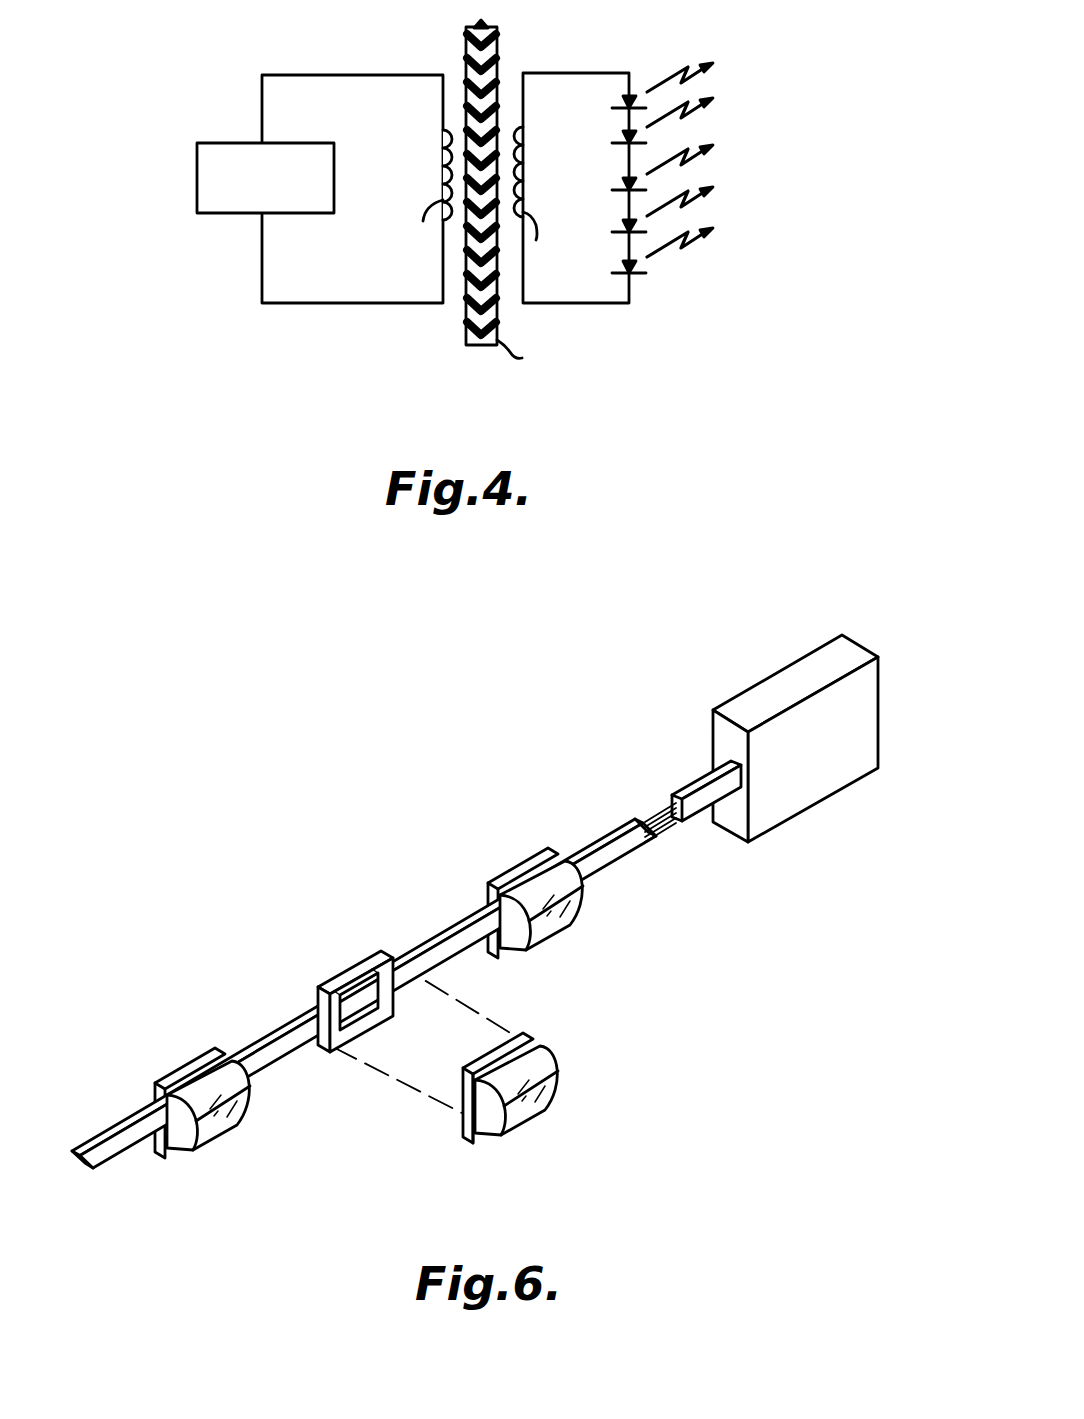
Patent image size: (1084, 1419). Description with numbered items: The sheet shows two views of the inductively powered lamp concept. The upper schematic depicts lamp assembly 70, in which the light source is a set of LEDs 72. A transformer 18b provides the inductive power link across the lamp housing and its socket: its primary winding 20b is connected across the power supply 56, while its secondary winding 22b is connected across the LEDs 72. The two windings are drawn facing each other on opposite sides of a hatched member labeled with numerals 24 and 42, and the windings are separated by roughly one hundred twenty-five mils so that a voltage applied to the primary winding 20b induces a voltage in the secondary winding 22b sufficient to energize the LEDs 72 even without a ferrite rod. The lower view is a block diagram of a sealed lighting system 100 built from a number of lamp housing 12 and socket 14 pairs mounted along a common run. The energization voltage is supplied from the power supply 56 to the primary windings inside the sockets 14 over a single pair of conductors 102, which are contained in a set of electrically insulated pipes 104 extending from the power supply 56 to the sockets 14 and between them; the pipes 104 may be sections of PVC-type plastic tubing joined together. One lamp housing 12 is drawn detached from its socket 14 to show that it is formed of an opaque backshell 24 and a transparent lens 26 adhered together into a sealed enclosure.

In FIG. 4, the lamp assembly 70 is at (218, 284).
In FIG. 4, the power supply 56 is at (283, 213).
In FIG. 6, the power supply 56 is at (818, 795).
In FIG. 4, the transformer 18b is at (426, 135).
In FIG. 4, the primary winding 20b is at (409, 228).
In FIG. 4, the backshell 24 is at (467, 337).
In FIG. 6, the backshell 24 is at (484, 1118).
In FIG. 4, the core surface 42 is at (525, 361).
In FIG. 4, the secondary winding 22b is at (576, 188).
In FIG. 4, the LEDs 72 is at (638, 100).
In FIG. 6, the lighting system 100 is at (475, 915).
In FIG. 6, the electrically insulated pipes 104 is at (588, 868).
In FIG. 6, the conductors 102 is at (673, 827).
In FIG. 6, the socket 14 is at (368, 991).
In FIG. 6, the lamp housing 12 is at (496, 1104).
In FIG. 6, the lens 26 is at (463, 1103).